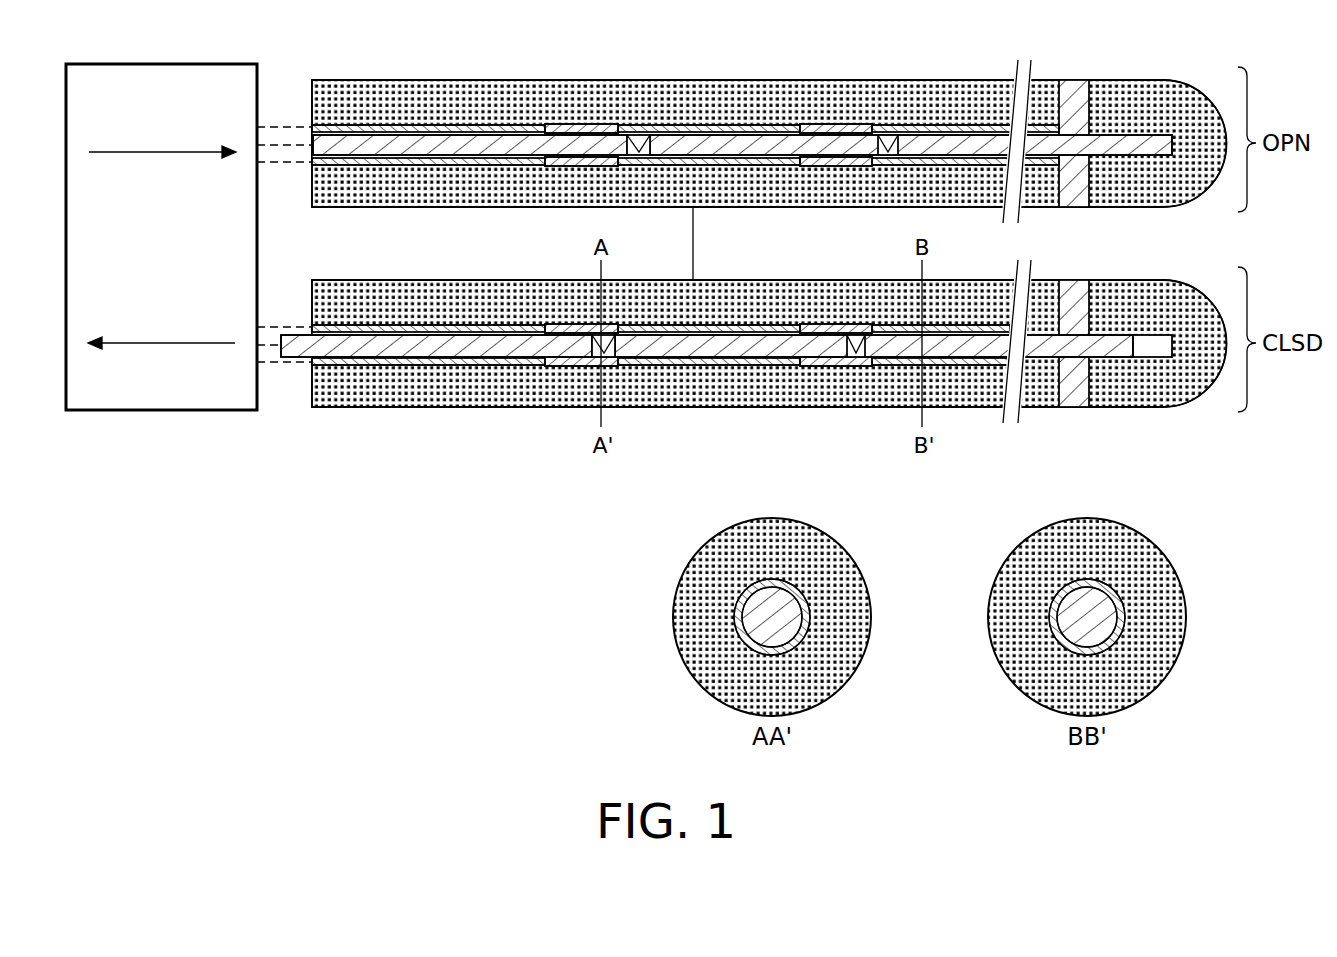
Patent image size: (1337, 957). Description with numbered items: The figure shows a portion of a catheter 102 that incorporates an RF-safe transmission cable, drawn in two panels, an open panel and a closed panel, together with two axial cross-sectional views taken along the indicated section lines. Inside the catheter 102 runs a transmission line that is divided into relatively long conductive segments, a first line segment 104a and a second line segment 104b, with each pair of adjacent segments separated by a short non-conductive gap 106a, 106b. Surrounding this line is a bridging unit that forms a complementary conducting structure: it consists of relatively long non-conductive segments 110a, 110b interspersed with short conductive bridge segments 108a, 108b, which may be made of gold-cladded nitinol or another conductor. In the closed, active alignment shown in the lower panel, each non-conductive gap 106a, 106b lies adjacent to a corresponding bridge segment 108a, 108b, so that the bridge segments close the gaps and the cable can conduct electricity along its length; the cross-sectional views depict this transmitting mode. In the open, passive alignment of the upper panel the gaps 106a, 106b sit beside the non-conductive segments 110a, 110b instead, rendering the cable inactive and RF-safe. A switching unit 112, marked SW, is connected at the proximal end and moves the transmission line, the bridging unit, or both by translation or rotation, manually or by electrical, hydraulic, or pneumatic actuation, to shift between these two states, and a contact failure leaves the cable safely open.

The catheter 102 is at (333, 95).
The first line segment 104a is at (440, 147).
The second line segment 104b is at (728, 133).
The non-conductive gap 106a is at (638, 146).
The non-conductive gap 106b is at (888, 160).
The bridge segment 108a is at (578, 124).
The bridge segment 108b is at (840, 124).
The non-conductive segment 110a is at (405, 125).
The non-conductive segment 110b is at (765, 165).
The switching unit 112 is at (168, 398).